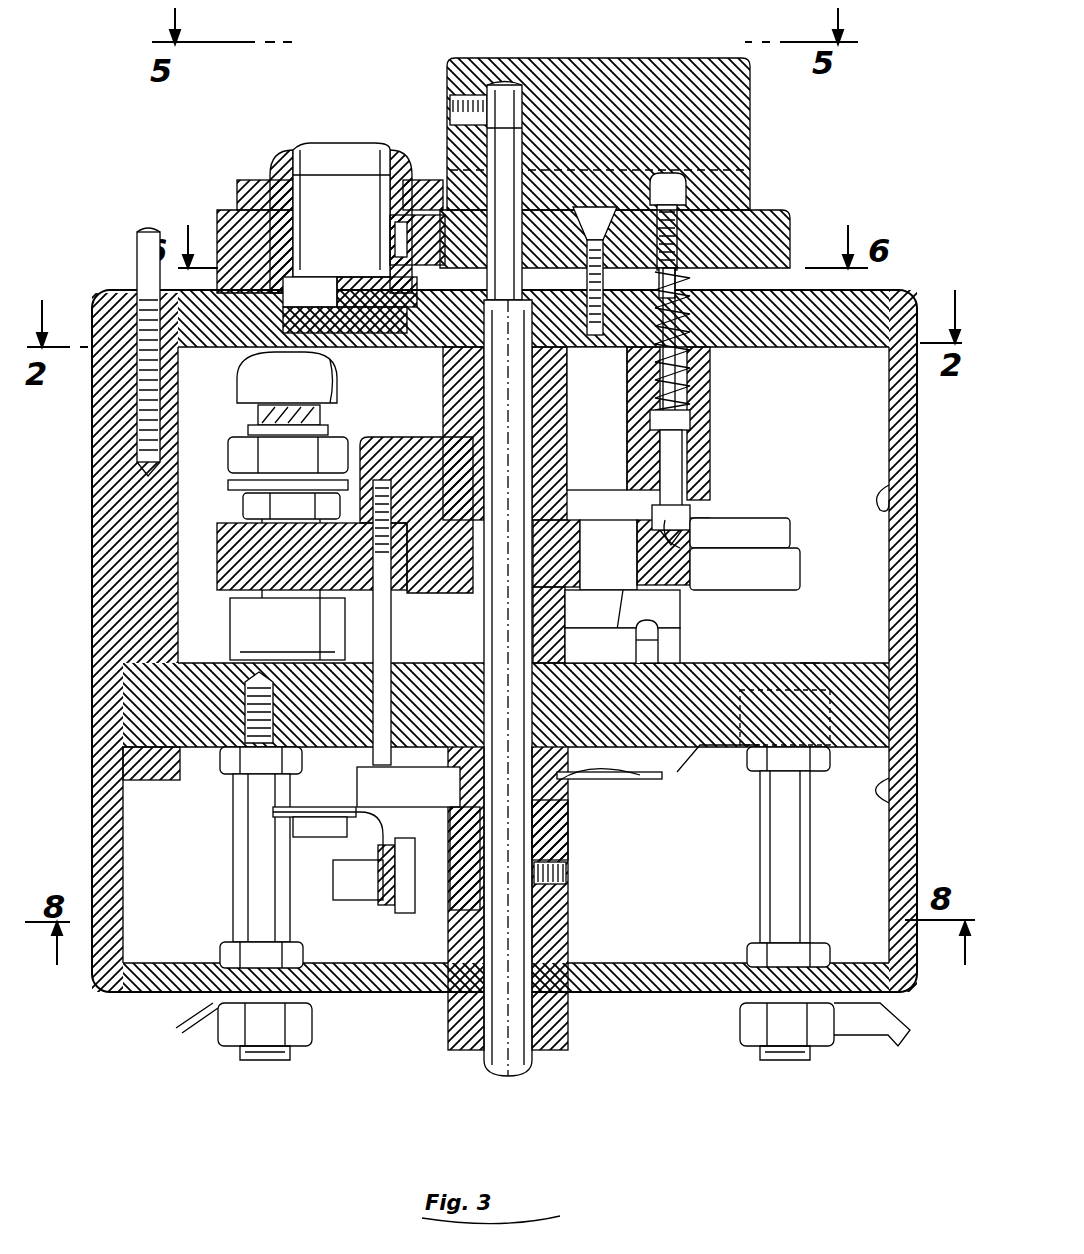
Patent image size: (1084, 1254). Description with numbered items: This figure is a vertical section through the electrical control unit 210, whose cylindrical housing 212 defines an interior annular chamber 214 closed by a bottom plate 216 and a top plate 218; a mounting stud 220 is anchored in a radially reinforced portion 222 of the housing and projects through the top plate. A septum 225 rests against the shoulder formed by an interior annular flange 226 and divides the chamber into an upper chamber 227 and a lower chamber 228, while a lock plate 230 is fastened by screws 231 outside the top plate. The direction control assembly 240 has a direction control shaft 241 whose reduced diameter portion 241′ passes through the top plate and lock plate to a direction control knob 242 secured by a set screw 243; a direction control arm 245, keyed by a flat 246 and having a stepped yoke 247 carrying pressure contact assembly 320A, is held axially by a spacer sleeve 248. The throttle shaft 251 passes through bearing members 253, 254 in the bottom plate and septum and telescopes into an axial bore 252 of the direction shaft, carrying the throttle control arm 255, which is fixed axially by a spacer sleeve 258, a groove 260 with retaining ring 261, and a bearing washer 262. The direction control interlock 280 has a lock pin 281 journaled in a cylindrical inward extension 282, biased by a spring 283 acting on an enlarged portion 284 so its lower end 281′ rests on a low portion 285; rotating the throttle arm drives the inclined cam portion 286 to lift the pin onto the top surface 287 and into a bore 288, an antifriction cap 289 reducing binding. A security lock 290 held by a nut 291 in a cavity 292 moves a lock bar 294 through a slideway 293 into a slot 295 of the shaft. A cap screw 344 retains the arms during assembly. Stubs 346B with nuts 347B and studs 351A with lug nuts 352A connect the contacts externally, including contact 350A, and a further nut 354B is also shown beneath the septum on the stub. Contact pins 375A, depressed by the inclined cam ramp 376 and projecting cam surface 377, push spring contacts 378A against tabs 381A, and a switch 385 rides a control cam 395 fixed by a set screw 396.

The electrical control unit 210 is at (510, 515).
The cylindrical housing 212 is at (917, 462).
The interior annular chamber 214 is at (903, 498).
The bottom plate 216 is at (628, 990).
The top plate 218 is at (855, 320).
The mounting stud 220 is at (143, 280).
The radially reinforced portion 222 is at (137, 495).
The septum 225 is at (895, 675).
The interior annular flange 226 is at (905, 800).
The upper chamber 227 is at (799, 505).
The lower chamber 228 is at (724, 855).
The lock plate 230 is at (793, 213).
The screw 231 is at (595, 175).
The direction control assembly 240 is at (264, 473).
The direction control shaft 241 is at (447, 360).
The reduced diameter portion 241′ is at (495, 127).
The direction control knob 242 is at (530, 60).
The set screw 243 is at (473, 97).
The direction control arm 245 is at (415, 437).
The flat 246 is at (463, 420).
The stepped yoke 247 is at (218, 536).
The spacer sleeve 248 is at (563, 398).
The throttle shaft 251 is at (540, 1062).
The axial bore 252 is at (560, 512).
The bearing member 253 is at (567, 1038).
The bearing member 254 is at (457, 768).
The throttle control arm 255 is at (697, 577).
The spacer sleeve 258 is at (562, 605).
The groove 260 is at (560, 642).
The retaining ring 261 is at (480, 648).
The bearing washer 262 is at (608, 778).
The direction control interlock 280 is at (750, 408).
The lock pin 281 is at (710, 360).
The lower end of lock pin 281′ is at (693, 512).
The cylindrical inward extension 282 is at (703, 455).
The spring 283 is at (713, 388).
The enlarged portion 284 is at (692, 420).
The low portion 285 is at (710, 522).
The inclined cam portion 286 is at (722, 535).
The top surface 287 is at (687, 523).
The bore 288 is at (677, 188).
The antifriction cap 289 is at (705, 562).
The security lock 290 is at (335, 155).
The nut 291 is at (267, 207).
The cavity 292 is at (237, 233).
The slideway 293 is at (395, 250).
The lock bar 294 is at (395, 268).
The slot 295 is at (440, 180).
The pressure contact assembly 320A is at (235, 452).
The cap screw 344 is at (355, 615).
The stub 346B is at (225, 883).
The nut 347B is at (222, 1040).
The contact 350A is at (803, 652).
The stud 351A is at (800, 887).
The lug nut 352A is at (831, 1030).
The nut 354B is at (218, 775).
The contact pin 375A is at (653, 645).
The inclined cam ramp 376 is at (668, 602).
The projecting cam surface 377 is at (667, 632).
The spring contact 378A is at (700, 752).
The tab 381A is at (668, 785).
The switch 385 is at (382, 903).
The control cam 395 is at (557, 828).
The set screw 396 is at (573, 872).